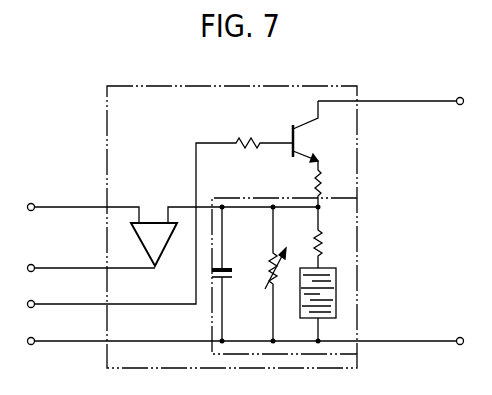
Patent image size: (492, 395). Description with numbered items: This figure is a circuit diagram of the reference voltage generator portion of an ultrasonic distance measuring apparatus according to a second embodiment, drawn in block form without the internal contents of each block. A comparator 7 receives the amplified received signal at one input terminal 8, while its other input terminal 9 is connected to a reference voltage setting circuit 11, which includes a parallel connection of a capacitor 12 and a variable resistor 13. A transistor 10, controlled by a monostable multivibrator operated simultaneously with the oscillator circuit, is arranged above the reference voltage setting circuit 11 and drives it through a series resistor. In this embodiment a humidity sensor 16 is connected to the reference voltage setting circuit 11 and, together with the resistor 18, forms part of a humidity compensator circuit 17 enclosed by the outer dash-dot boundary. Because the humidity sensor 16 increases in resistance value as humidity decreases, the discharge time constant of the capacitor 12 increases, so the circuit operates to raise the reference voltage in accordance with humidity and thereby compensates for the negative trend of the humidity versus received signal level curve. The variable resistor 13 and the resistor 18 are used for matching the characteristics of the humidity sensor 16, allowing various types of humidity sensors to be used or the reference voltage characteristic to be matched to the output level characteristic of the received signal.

The comparator 7 is at (168, 246).
The input terminal 8 is at (134, 206).
The other input terminal 9 is at (177, 206).
The transistor 10 is at (305, 141).
The reference voltage setting circuit 11 is at (210, 324).
The capacitor 12 is at (238, 272).
The variable resistor 13 is at (264, 271).
The humidity sensor 16 is at (339, 288).
The humidity compensator circuit 17 is at (358, 128).
The resistor 18 is at (330, 241).